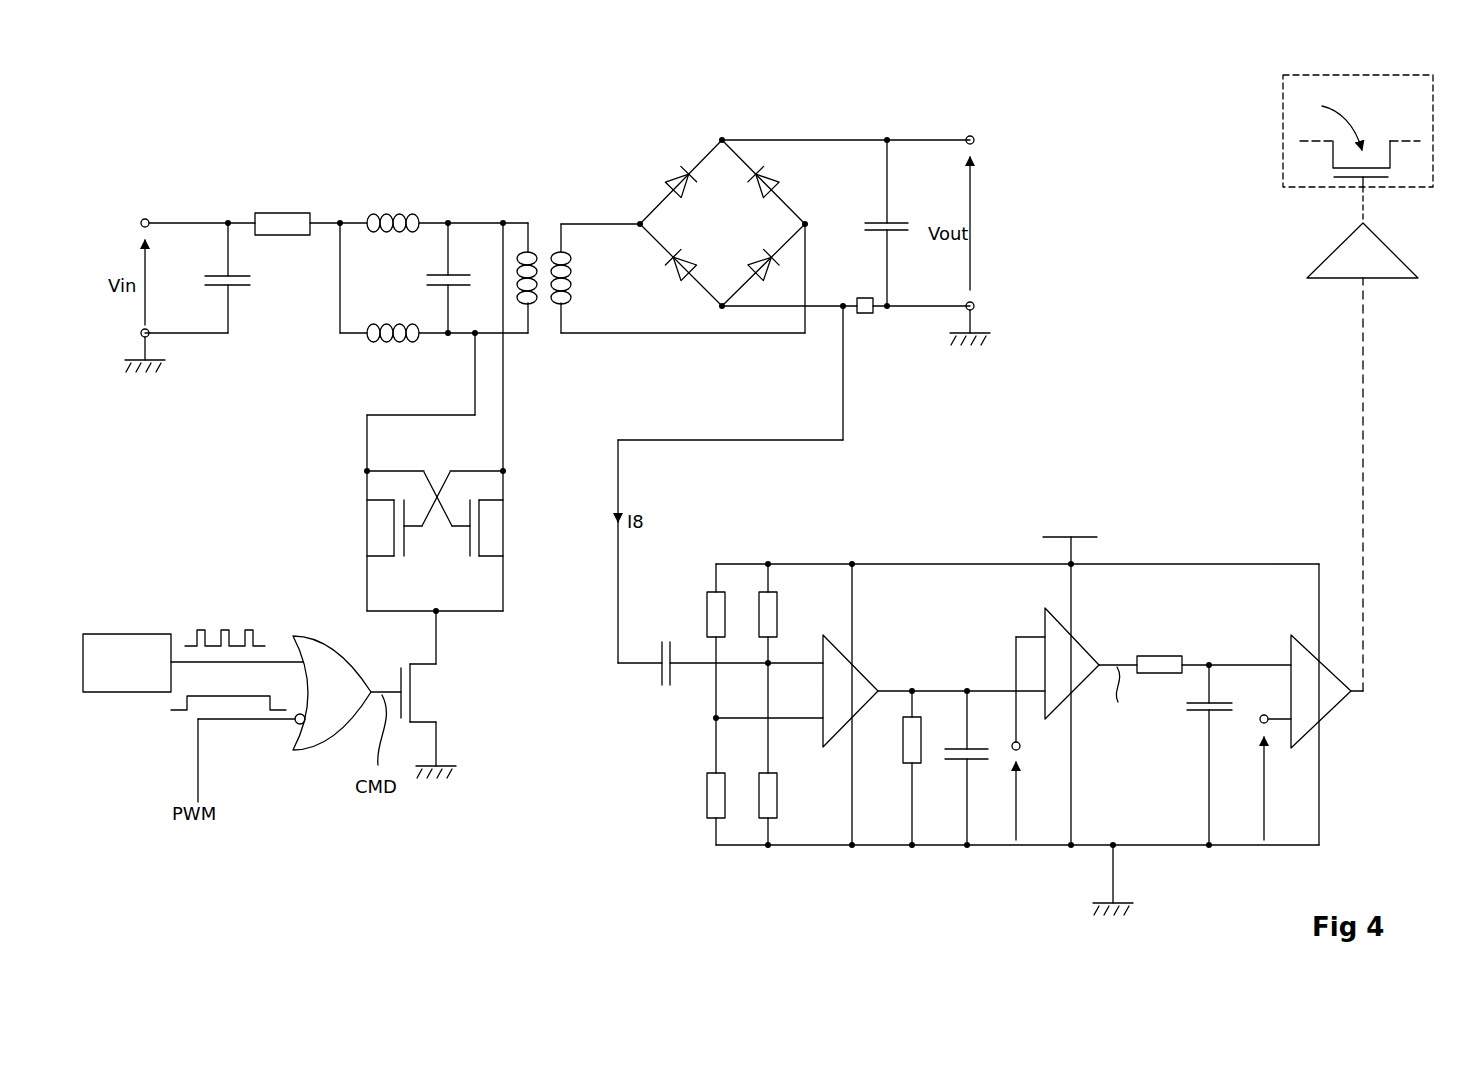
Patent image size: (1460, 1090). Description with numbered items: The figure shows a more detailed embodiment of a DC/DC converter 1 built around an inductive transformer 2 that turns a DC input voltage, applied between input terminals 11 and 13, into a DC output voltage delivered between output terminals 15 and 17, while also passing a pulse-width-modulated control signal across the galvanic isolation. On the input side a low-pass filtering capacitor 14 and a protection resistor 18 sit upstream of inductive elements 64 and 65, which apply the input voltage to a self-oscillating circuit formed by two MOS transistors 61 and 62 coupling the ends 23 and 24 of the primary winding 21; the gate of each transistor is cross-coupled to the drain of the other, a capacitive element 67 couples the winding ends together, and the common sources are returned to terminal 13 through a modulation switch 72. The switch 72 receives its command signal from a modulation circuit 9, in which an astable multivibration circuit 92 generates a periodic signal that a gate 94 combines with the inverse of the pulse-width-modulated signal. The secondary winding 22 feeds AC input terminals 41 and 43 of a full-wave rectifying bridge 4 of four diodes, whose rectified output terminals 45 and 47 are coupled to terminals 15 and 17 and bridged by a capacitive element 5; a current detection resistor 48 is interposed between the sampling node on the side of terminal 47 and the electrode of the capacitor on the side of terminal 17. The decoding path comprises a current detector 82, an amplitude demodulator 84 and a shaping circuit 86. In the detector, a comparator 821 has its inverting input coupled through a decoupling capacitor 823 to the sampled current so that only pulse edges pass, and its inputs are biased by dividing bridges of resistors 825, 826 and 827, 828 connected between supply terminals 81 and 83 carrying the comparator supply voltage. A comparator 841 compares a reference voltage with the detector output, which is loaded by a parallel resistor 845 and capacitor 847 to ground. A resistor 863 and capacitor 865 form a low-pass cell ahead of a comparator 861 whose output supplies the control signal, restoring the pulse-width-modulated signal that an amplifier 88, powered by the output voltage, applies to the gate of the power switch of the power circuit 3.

The DC/DC converter 1 is at (489, 147).
The inductive transformer 2 is at (541, 352).
The power circuit 3 is at (1283, 165).
The rectifying circuit 4 is at (705, 351).
The capacitive element 5 is at (880, 234).
The coding or modulation device 9 is at (281, 846).
The input terminal 11 is at (148, 219).
The input terminal 13 is at (141, 333).
The filtering capacitor 14 is at (240, 290).
The output terminal 15 is at (974, 139).
The output terminal 17 is at (974, 305).
The protection resistor 18 is at (282, 212).
The primary winding 21 is at (533, 262).
The secondary winding 22 is at (572, 276).
The winding end terminal 23 is at (503, 220).
The winding end terminal 24 is at (473, 337).
The AC input terminal 41 is at (638, 222).
The AC input terminal 43 is at (807, 222).
The rectified output terminal 45 is at (724, 138).
The rectified output terminal 47 is at (722, 302).
The current detection resistor 48 is at (867, 316).
The switch 61 is at (482, 525).
The switch 62 is at (392, 525).
The inductive element 64 is at (388, 212).
The inductive element 65 is at (378, 322).
The capacitive element 67 is at (455, 274).
The modulation switch 72 is at (420, 690).
The supply terminal 81 is at (1075, 563).
The current detector 82 is at (841, 741).
The ground terminal 83 is at (1071, 849).
The amplitude demodulator 84 is at (1009, 765).
The shaping circuit 86 is at (1230, 768).
The gate driver circuit 88 is at (1375, 232).
The astable multivibration circuit 92 is at (125, 633).
The gate 94 is at (318, 740).
The comparator 821 is at (862, 666).
The decoupling capacitor 823 is at (664, 690).
The resistor 825 is at (778, 620).
The resistor 826 is at (778, 795).
The resistor 827 is at (706, 605).
The resistor 828 is at (706, 797).
The comparator 841 is at (1085, 652).
The resistor 845 is at (930, 748).
The capacitor 847 is at (955, 765).
The comparator 861 is at (1298, 640).
The resistor 863 is at (1160, 655).
The capacitor 865 is at (1197, 714).